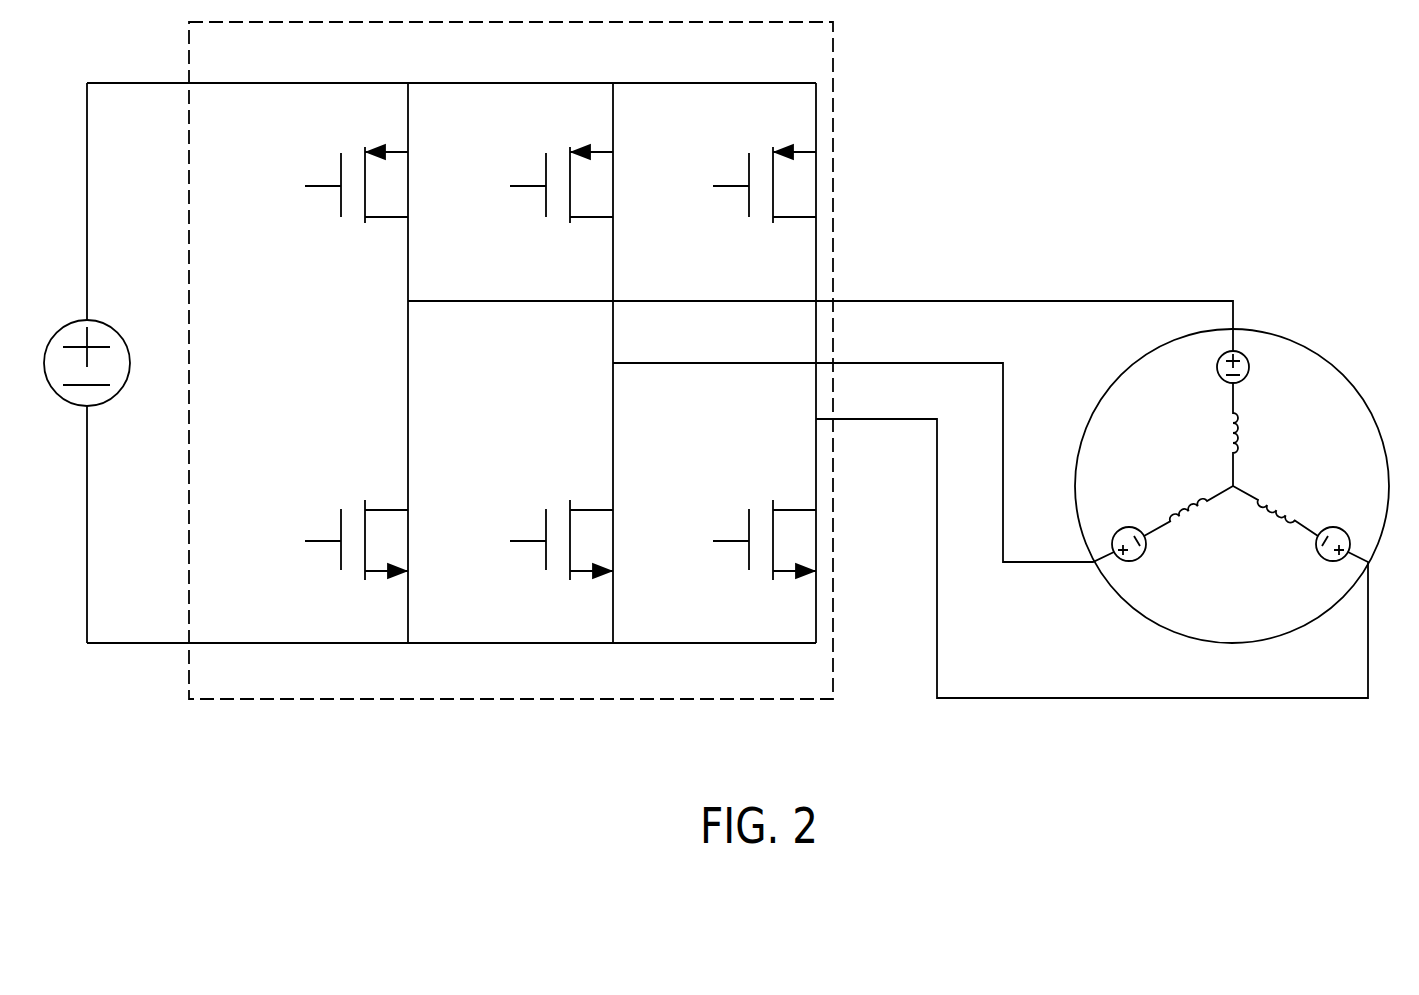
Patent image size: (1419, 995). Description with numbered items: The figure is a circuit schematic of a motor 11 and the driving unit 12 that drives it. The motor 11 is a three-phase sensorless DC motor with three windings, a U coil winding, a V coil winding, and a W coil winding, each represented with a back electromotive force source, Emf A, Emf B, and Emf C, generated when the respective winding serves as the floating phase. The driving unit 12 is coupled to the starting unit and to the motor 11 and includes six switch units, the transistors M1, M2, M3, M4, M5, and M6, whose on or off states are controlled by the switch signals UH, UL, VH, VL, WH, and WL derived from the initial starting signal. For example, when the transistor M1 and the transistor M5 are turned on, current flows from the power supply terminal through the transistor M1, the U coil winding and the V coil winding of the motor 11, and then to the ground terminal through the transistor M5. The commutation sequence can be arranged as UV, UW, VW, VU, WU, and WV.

The motor 11 is at (1309, 348).
The driving unit 12 is at (835, 96).
The transistor M1 is at (330, 202).
The transistor M2 is at (536, 202).
The transistor M3 is at (738, 202).
The transistor M4 is at (330, 556).
The transistor M5 is at (536, 556).
The transistor M6 is at (738, 556).